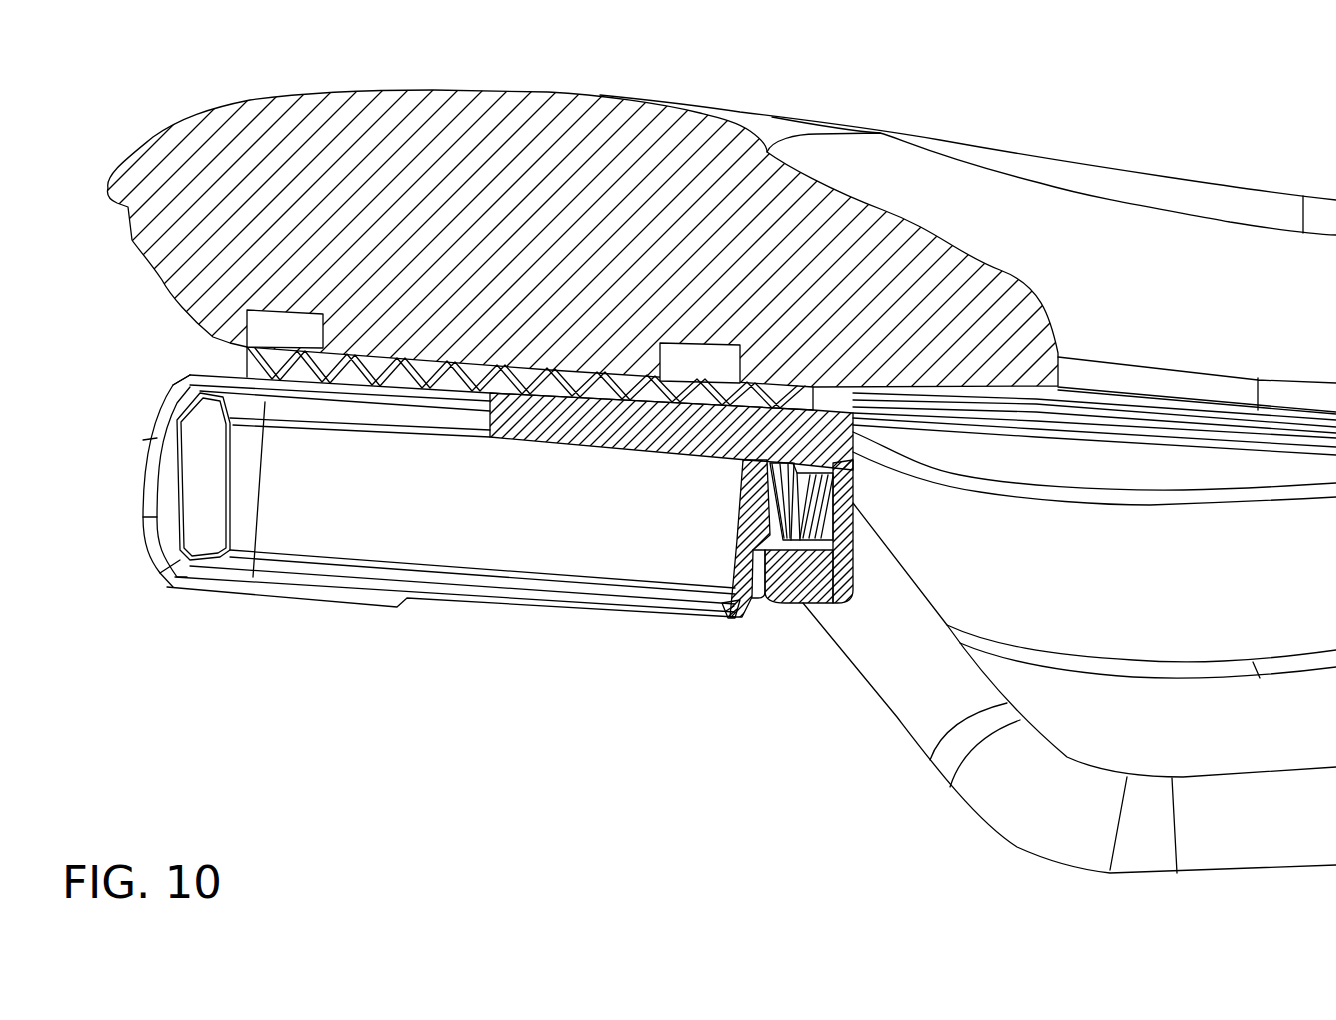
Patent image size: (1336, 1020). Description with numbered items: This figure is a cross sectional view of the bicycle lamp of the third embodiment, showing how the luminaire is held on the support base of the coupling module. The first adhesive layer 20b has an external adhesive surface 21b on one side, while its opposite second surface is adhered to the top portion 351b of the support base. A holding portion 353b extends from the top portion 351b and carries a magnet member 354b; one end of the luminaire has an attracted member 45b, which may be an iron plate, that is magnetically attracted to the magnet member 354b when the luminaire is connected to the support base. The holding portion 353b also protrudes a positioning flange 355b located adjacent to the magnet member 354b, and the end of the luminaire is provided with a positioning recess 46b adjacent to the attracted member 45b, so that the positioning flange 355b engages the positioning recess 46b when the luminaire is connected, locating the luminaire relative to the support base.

The external adhesive surface 21b is at (490, 357).
The first adhesive layer 20b is at (247, 357).
The top portion 351b is at (523, 423).
The attracted member 45b is at (743, 503).
The positioning recess 46b is at (763, 577).
The holding portion 353b is at (830, 570).
The magnet member 354b is at (800, 517).
The positioning flange 355b is at (770, 600).